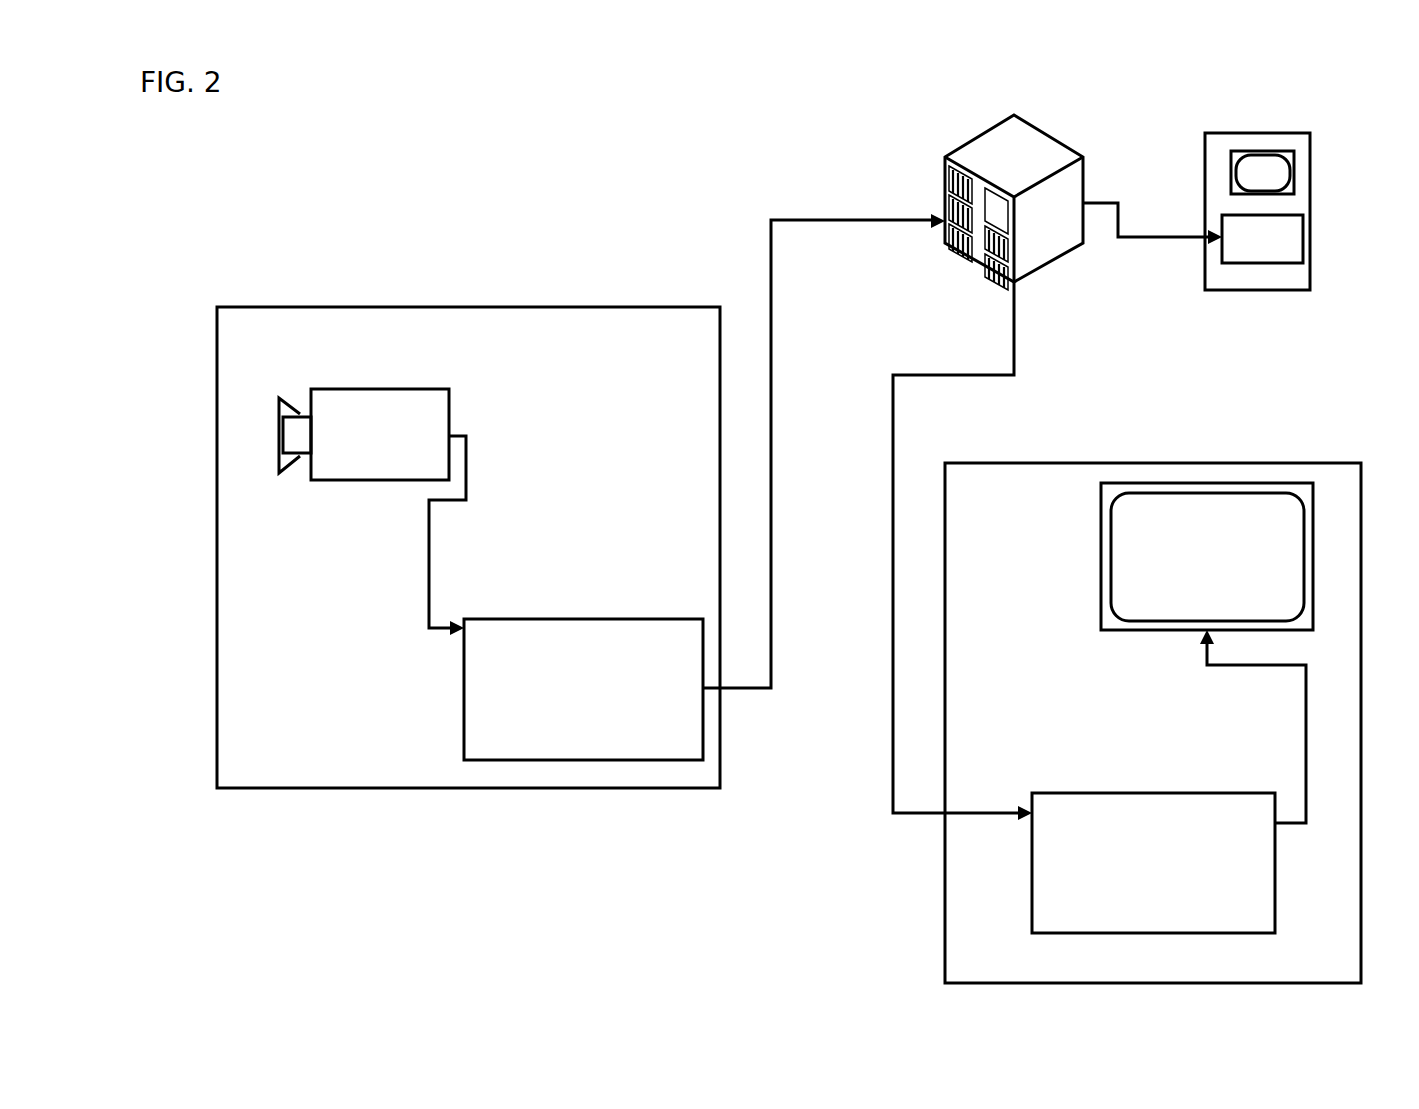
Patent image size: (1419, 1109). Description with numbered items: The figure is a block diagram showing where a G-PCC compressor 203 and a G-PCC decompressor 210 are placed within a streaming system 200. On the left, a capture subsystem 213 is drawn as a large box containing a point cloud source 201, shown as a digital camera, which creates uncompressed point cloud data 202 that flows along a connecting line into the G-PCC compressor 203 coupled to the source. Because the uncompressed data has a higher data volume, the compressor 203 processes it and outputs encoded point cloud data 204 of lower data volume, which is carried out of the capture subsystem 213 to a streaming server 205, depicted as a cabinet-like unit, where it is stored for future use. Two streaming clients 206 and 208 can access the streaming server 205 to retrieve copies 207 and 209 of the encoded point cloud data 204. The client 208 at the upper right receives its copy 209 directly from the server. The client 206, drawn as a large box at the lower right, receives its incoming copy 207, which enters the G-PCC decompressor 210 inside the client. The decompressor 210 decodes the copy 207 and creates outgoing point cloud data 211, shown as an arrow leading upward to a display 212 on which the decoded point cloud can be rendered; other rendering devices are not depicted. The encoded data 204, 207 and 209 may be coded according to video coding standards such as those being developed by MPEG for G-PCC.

The streaming system 200 is at (283, 160).
The point cloud source 201 is at (382, 388).
The uncompressed point cloud data 202 is at (428, 570).
The G-PCC compressor 203 is at (597, 618).
The encoded point cloud data 204 is at (771, 255).
The streaming server 205 is at (945, 187).
The streaming client 206 is at (945, 966).
The copy of encoded point cloud data 207 is at (893, 618).
The streaming client 208 is at (1310, 170).
The copy of encoded point cloud data 209 is at (1133, 237).
The G-PCC decompressor 210 is at (1032, 910).
The outgoing point cloud data 211 is at (1306, 723).
The display 212 is at (1101, 555).
The capture subsystem 213 is at (373, 789).